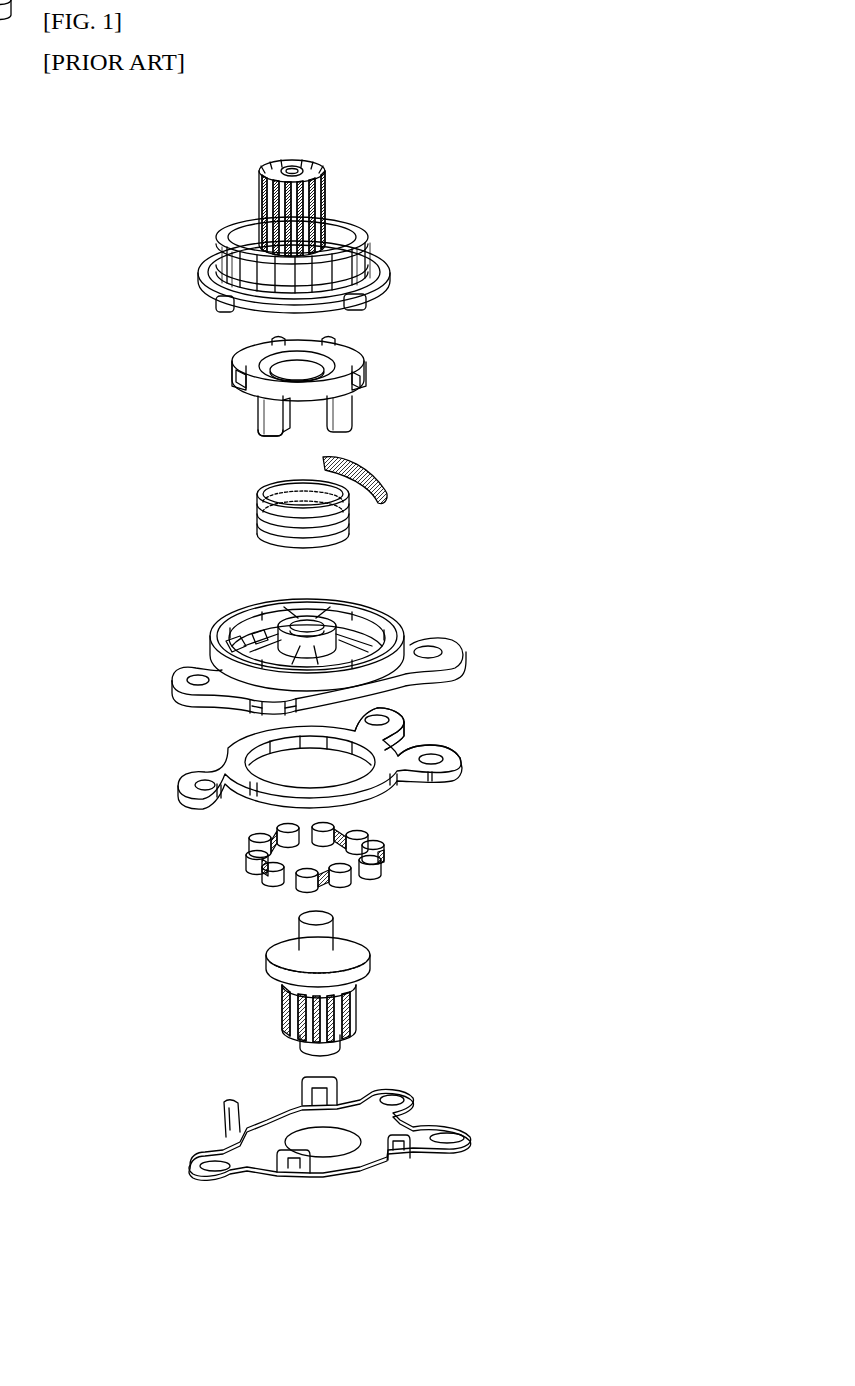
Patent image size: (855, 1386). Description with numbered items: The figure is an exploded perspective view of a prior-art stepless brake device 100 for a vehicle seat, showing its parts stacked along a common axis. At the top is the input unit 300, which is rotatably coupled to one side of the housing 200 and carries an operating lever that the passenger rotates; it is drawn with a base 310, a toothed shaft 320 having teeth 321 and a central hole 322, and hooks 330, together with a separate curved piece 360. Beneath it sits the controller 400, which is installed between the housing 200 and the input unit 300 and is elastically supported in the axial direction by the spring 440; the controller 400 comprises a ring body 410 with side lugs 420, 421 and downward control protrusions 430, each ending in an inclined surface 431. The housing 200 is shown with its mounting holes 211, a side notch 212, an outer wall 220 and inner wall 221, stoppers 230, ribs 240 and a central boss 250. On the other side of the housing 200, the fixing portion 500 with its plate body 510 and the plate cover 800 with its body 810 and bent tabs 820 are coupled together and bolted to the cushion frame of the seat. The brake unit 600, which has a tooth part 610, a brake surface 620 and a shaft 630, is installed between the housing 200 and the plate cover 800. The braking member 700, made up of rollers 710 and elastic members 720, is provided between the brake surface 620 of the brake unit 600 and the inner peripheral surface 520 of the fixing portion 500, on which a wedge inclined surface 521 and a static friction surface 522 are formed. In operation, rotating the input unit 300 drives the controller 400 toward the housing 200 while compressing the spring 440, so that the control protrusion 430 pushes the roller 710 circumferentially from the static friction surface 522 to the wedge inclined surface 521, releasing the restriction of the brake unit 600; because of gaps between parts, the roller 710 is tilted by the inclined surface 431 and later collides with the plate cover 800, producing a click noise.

The vehicle seat recliner (prior art) 100 is at (487, 118).
The input unit 300 is at (186, 244).
The cam base 310 is at (378, 258).
The gear shaft 320 is at (341, 188).
The shaft teeth 321 is at (332, 200).
The shaft hole 322 is at (300, 171).
The hooks 330 is at (372, 303).
The arc-shaped member 360 is at (389, 479).
The controller 400 is at (205, 359).
The ring body 410 is at (350, 357).
The protrusion 420 is at (366, 391).
The protrusion lug 421 is at (368, 379).
The control protrusion 430 is at (266, 421).
The inclined surface 431 is at (285, 443).
The spring 440 is at (258, 519).
The housing 200 is at (162, 654).
The mounting hole 211 is at (455, 646).
The side notch 212 is at (252, 700).
The outer wall 220 is at (402, 621).
The inner wall 221 is at (350, 613).
The stopper 230 is at (228, 649).
The guide ribs 240 is at (235, 637).
The central boss 250 is at (282, 629).
The fixing portion 500 is at (167, 778).
The plate body 510 is at (460, 760).
The inner peripheral surface 520 is at (535, 694).
The wedge inclined surface 521 is at (380, 724).
The static friction surface 522 is at (400, 748).
The braking member 700 is at (220, 851).
The roller 710 is at (378, 860).
The elastic member 720 is at (336, 879).
The brake unit 600 is at (258, 952).
The tooth part 610 is at (358, 1004).
The brake surface 620 is at (372, 958).
The drive shaft 630 is at (334, 932).
The plate cover 800 is at (197, 1094).
The plate body 810 is at (273, 1171).
The bent tabs 820 is at (297, 1178).